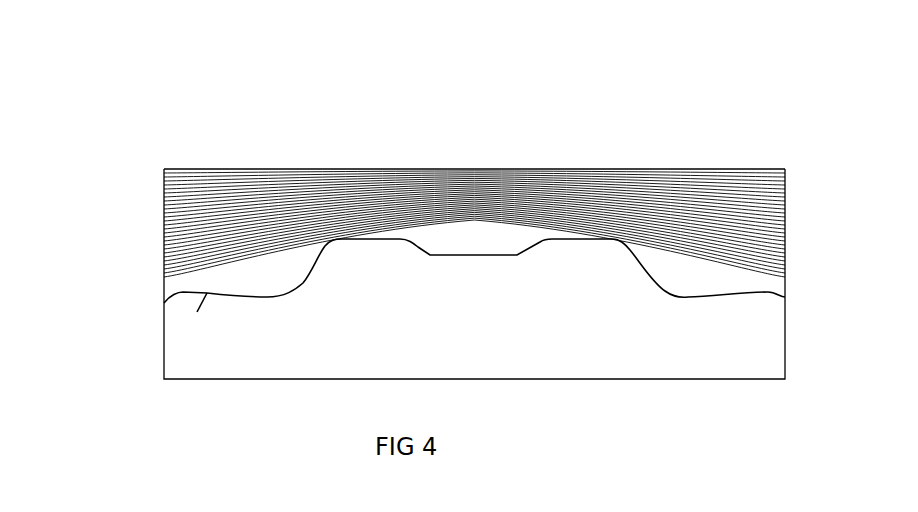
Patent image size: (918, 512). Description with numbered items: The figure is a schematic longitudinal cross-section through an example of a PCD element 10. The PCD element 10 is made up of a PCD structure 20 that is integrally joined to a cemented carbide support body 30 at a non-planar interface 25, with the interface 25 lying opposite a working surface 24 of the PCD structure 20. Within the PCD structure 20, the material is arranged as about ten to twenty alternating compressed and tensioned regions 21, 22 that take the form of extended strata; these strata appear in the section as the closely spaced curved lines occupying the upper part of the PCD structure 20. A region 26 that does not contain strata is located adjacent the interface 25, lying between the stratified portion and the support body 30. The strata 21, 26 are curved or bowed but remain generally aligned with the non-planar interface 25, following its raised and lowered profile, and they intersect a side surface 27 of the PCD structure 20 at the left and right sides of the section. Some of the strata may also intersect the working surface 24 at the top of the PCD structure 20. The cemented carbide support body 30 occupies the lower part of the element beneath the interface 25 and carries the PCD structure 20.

The PCD element 10 is at (222, 88).
The PCD structure 20 is at (439, 187).
The compressed region 21 is at (205, 188).
The tensioned region 22 is at (474, 241).
The working surface 24 is at (598, 172).
The non-planar interface 25 is at (197, 312).
The region that does not contain strata 26 is at (214, 277).
The side surface 27 is at (158, 234).
The cemented carbide support body 30 is at (214, 351).